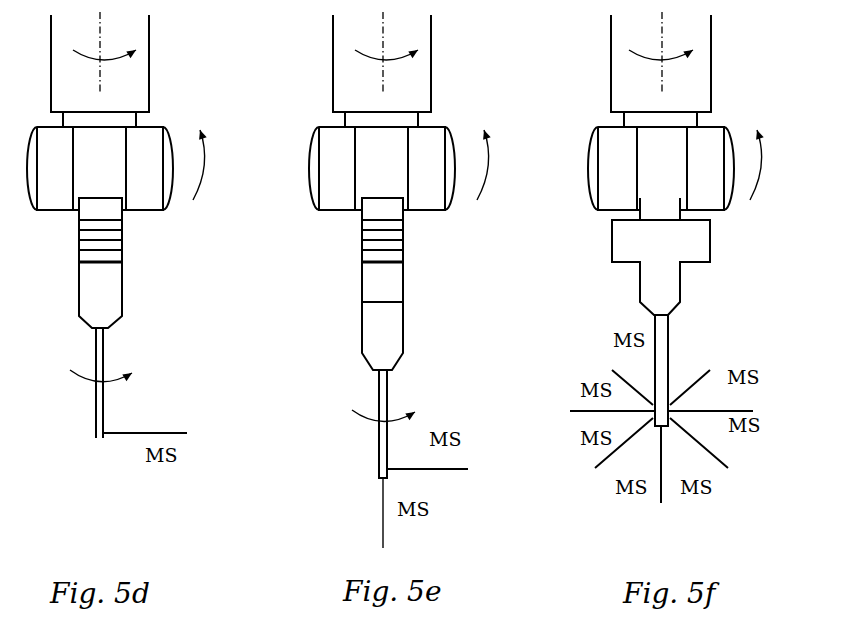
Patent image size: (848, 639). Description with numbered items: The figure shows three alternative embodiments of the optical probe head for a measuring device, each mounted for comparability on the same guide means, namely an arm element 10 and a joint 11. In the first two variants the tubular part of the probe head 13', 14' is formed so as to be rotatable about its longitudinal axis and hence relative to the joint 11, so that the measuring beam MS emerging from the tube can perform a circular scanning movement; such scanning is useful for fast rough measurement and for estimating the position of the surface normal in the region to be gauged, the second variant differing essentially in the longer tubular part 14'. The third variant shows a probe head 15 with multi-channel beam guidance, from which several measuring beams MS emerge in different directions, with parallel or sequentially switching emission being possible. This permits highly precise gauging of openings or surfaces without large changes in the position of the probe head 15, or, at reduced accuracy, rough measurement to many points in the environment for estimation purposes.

In FIG. 5d, the arm element 10 is at (135, 25).
In FIG. 5e, the arm element 10 is at (422, 33).
In FIG. 5f, the arm element 10 is at (628, 62).
In FIG. 5d, the joint 11 is at (152, 188).
In FIG. 5e, the joint 11 is at (428, 193).
In FIG. 5f, the joint 11 is at (612, 190).
In FIG. 5d, the tubular part of the probe head 13' is at (157, 318).
In FIG. 5e, the tubular part of the probe head 14' is at (329, 373).
In FIG. 5f, the probe head 15 is at (657, 278).